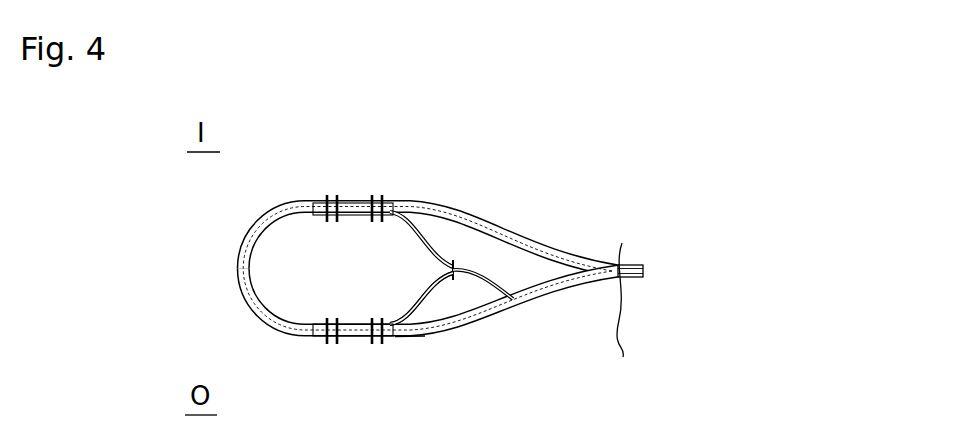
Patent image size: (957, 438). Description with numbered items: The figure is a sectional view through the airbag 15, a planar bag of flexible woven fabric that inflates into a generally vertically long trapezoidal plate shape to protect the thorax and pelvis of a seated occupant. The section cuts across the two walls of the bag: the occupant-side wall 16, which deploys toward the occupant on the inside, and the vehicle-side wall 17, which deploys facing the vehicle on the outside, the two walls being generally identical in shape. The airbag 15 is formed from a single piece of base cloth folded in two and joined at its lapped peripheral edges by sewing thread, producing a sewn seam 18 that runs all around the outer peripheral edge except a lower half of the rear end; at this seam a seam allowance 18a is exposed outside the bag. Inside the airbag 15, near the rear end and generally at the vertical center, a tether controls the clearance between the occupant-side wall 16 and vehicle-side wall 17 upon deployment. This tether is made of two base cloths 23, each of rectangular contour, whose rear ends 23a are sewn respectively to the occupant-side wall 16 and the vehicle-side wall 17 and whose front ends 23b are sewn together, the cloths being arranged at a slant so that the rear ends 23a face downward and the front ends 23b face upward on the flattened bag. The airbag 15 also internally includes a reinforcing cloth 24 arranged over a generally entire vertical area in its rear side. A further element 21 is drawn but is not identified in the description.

The airbag 15 is at (576, 228).
The occupant-side wall 16 is at (472, 215).
The vehicle-side wall 17 is at (473, 323).
The sewn seam 18 is at (622, 243).
The seam allowance 18a is at (643, 271).
The branch tube 21 is at (438, 305).
The base cloths 23 is at (397, 226).
The rear ends 23a is at (317, 205).
The front ends 23b is at (513, 299).
The reinforcing cloth 24 is at (407, 336).